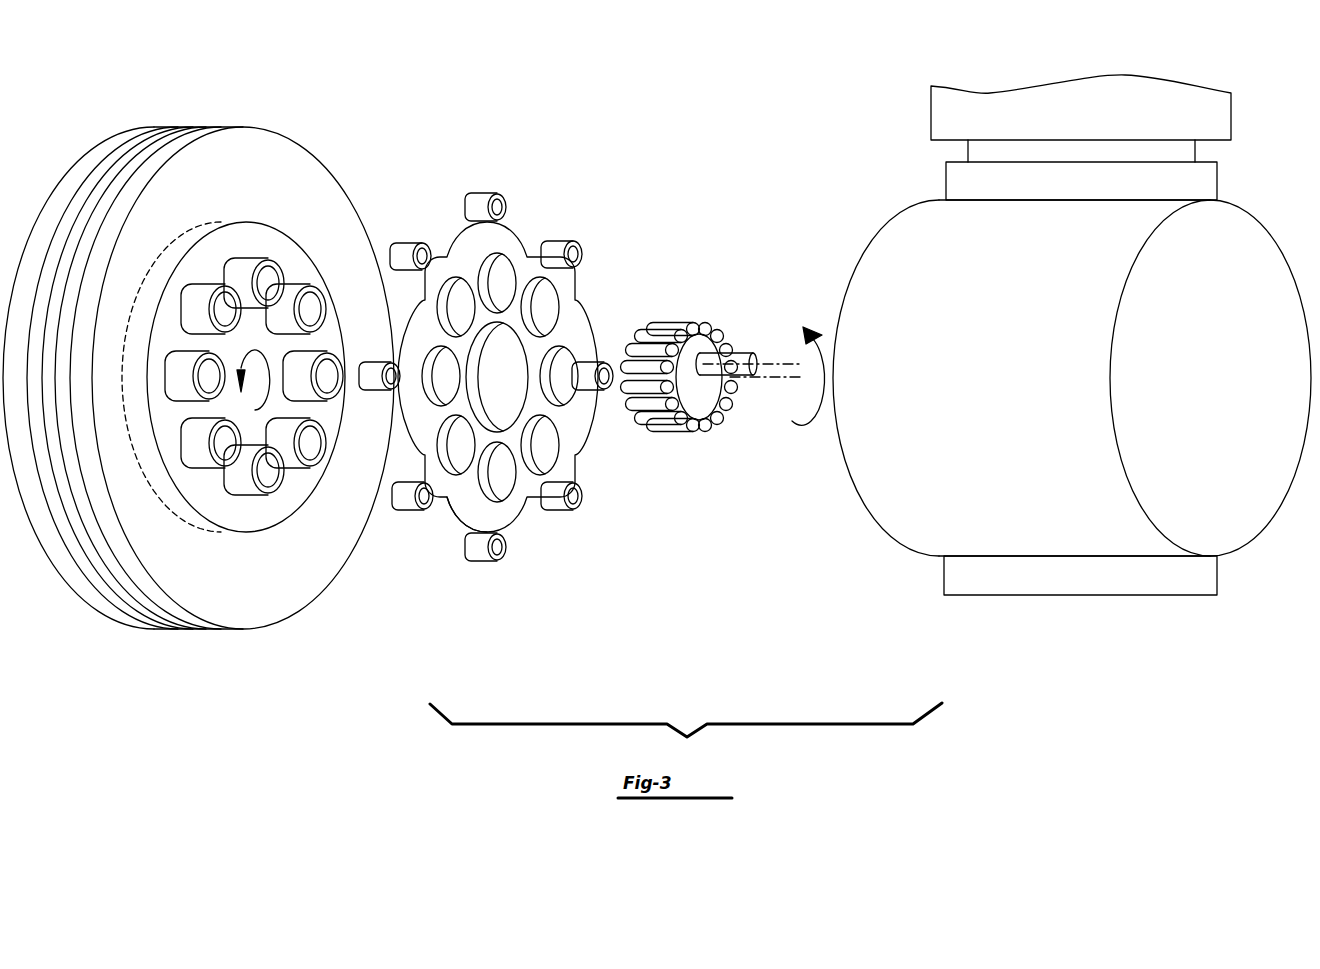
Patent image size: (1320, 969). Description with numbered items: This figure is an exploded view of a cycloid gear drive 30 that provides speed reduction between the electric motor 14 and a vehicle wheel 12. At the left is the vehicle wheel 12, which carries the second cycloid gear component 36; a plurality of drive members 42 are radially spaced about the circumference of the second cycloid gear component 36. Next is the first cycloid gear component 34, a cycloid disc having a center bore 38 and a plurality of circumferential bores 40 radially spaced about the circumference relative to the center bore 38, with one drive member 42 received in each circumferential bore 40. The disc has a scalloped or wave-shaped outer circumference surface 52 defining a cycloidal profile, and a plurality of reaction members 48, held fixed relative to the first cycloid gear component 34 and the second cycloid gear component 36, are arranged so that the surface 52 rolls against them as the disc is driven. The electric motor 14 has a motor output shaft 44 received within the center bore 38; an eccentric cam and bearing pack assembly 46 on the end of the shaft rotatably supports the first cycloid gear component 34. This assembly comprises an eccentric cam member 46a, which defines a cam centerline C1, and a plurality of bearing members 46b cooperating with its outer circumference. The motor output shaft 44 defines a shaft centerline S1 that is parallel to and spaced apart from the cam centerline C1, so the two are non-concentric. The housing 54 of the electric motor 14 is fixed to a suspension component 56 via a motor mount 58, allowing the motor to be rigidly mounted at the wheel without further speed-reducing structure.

The vehicle wheel 12 is at (175, 137).
The electric motor 14 is at (1045, 335).
The cycloid gear drive 30 is at (396, 592).
The first cycloid gear component 34 is at (585, 302).
The second cycloid gear component 36 is at (218, 503).
The center bore 38 is at (512, 362).
The circumferential bores 40 is at (540, 462).
The drive members 42 is at (308, 302).
The motor output shaft 44 is at (743, 355).
The eccentric cam and bearing pack assembly 46 is at (716, 308).
The eccentric cam member 46a is at (713, 396).
The bearing members 46b is at (660, 338).
The reaction members 48 is at (395, 250).
The wave-shaped outer circumference surface 52 is at (470, 520).
The housing 54 is at (885, 497).
The suspension component 56 is at (960, 112).
The motor mount 58 is at (960, 169).
The shaft centerline S1 is at (799, 373).
The cam centerline C1 is at (747, 377).